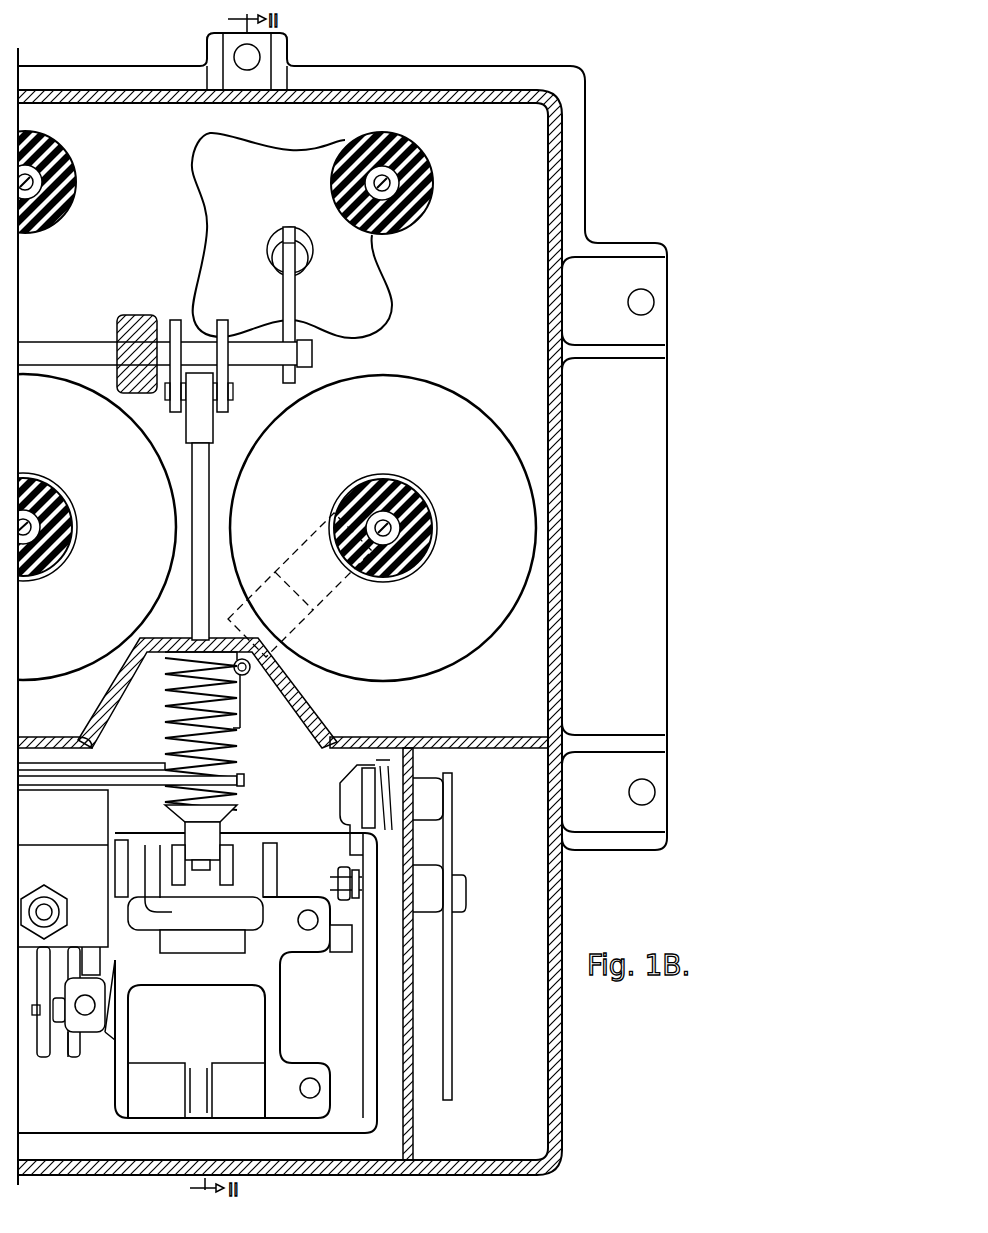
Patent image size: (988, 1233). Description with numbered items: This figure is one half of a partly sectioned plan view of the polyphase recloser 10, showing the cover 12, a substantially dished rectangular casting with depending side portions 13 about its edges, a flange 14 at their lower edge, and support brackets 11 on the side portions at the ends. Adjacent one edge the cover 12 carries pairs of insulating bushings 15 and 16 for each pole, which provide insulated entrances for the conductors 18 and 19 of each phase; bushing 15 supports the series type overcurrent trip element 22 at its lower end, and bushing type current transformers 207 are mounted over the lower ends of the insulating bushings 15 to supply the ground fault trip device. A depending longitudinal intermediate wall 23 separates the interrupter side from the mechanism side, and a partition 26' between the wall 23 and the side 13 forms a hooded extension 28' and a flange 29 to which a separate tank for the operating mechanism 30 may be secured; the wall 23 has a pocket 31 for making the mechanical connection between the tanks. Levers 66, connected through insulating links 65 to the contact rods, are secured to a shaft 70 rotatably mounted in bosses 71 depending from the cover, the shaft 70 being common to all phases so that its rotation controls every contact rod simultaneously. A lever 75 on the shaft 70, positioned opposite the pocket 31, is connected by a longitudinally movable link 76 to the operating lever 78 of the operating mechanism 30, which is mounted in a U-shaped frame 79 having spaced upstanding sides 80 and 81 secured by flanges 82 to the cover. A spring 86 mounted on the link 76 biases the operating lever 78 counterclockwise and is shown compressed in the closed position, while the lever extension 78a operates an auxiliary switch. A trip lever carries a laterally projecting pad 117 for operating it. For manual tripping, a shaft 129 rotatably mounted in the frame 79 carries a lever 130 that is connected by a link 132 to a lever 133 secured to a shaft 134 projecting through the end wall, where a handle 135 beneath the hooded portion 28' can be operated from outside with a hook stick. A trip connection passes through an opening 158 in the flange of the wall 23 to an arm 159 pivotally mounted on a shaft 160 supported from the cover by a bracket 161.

The polyphase recloser 10 is at (634, 157).
The support brackets 11 is at (670, 560).
The cover 12 is at (599, 909).
The side portions 13 is at (562, 1086).
The flange 14 is at (585, 208).
The insulating bushing 15 is at (73, 510).
The insulating bushing 16 is at (63, 207).
The conductor 18 is at (60, 497).
The conductor 19 is at (45, 178).
The overcurrent trip element 22 is at (336, 701).
The intermediate wall 23 is at (455, 737).
The partition 26' is at (428, 954).
The hooded extension 28' is at (501, 1016).
The flange 29 is at (377, 1010).
The operating mechanism 30 is at (207, 1028).
The pocket 31 is at (105, 712).
The insulating link 65 is at (305, 266).
The lever 66 is at (297, 300).
The shaft 70 is at (312, 355).
The boss 71 is at (117, 330).
The lever 75 is at (175, 408).
The link 76 is at (209, 455).
The operating lever 78 is at (228, 838).
The lever extension 78a is at (160, 915).
The frame 79 is at (313, 986).
The side 80 is at (278, 1034).
The side 81 is at (118, 1069).
The flanges 82 is at (97, 988).
The spring 86 is at (165, 735).
The pad 117 is at (97, 950).
The shaft 129 is at (345, 952).
The lever 130 is at (338, 890).
The link 132 is at (340, 872).
The lever 133 is at (340, 826).
The shaft 134 is at (336, 801).
The handle 135 is at (453, 948).
The opening 158 is at (243, 676).
The arm 159 is at (240, 722).
The shaft 160 is at (244, 779).
The bracket 161 is at (155, 786).
The current transformer 207 is at (58, 665).